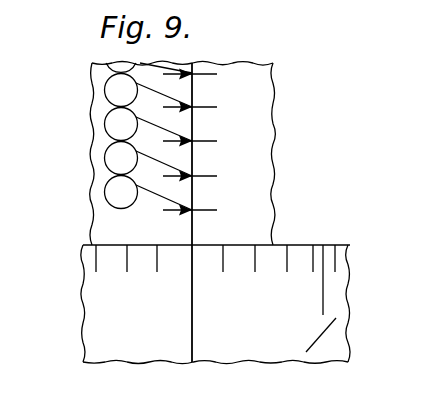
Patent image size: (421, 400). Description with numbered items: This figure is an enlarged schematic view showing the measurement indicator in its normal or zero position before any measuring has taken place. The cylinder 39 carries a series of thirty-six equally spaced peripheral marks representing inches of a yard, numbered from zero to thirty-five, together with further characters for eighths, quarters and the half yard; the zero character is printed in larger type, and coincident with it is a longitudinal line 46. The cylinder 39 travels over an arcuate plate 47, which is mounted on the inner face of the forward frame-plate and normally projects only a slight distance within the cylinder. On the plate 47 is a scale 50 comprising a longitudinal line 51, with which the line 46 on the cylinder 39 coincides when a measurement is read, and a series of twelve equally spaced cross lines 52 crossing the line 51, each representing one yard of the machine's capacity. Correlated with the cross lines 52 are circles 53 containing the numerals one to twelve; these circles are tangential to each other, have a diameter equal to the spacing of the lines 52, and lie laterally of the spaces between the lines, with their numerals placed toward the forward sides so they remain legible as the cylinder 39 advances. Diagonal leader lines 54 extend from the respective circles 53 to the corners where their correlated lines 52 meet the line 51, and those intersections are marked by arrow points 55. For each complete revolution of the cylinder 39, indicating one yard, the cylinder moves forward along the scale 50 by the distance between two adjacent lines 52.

The cylinder 39 is at (92, 320).
The longitudinal line 46 is at (188, 332).
The arcuate plate 47 is at (258, 172).
The scale 50 is at (196, 107).
The longitudinal line 51 is at (195, 120).
The cross lines 52 is at (204, 173).
The circles 53 is at (103, 158).
The diagonal leader lines 54 is at (158, 198).
The arrow points 55 is at (197, 208).